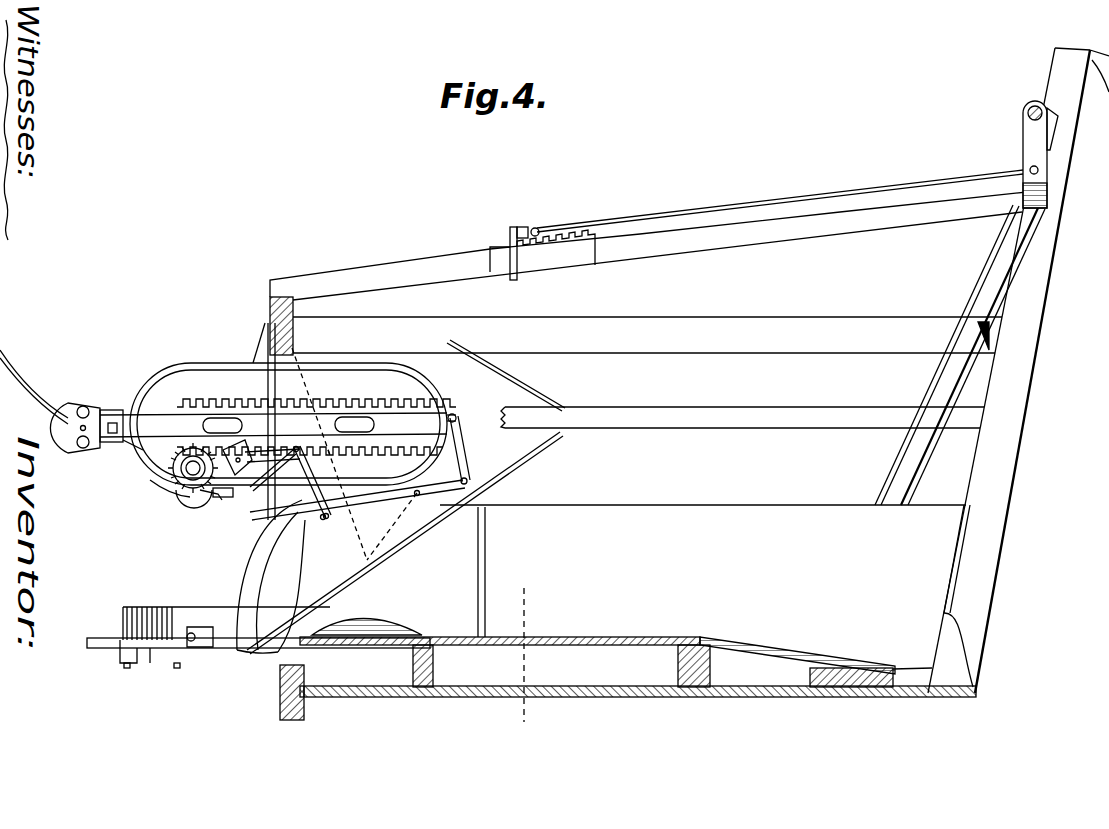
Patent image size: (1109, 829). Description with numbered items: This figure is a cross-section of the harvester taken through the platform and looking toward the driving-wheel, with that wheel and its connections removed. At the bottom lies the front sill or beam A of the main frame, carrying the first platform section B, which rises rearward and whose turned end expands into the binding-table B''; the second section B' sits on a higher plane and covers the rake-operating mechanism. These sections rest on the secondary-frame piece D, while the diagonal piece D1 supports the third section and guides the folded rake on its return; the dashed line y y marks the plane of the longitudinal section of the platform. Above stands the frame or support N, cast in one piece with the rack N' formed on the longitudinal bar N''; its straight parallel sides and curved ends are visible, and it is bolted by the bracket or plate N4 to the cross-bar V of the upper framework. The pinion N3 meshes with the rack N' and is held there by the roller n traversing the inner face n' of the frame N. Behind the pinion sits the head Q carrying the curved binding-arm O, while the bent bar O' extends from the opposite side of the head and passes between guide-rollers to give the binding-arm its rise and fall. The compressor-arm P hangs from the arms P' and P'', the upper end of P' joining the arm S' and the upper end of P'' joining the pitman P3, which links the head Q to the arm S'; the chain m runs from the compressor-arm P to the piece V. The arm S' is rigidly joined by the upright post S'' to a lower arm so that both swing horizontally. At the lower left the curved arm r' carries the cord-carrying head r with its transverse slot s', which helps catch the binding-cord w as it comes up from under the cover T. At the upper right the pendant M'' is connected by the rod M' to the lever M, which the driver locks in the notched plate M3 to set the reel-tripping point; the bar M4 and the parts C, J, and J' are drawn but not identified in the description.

The front sill or beam A is at (845, 692).
The bottom rail C is at (638, 705).
The second platform section B' is at (500, 630).
The first platform section B is at (816, 653).
The diagonal secondary-frame piece D1 is at (440, 666).
The secondary-frame piece D is at (679, 666).
The section line y y is at (521, 650).
The board J is at (706, 596).
The stem J' is at (439, 572).
The cross-bar of upper framework V is at (648, 273).
The upper arm S' is at (715, 416).
The rod M' is at (960, 355).
The arm M4 is at (780, 201).
The lever M is at (524, 239).
The notched plate M3 is at (542, 251).
The pendant M'' is at (1040, 154).
The bracket or plate N4 is at (268, 345).
The frame or support N is at (288, 424).
The rack N' is at (316, 415).
The inner face of frame n' is at (257, 415).
The longitudinal bar N'' is at (273, 430).
The curved bar or rod O' is at (50, 401).
The roller n is at (283, 496).
The pinion N3 is at (172, 487).
The head Q is at (210, 500).
The link or pitman P3 is at (261, 465).
The suspension arm P'' is at (313, 482).
The chain m is at (375, 505).
The front suspension arm P' is at (465, 450).
The compressor-arm P is at (357, 508).
The binding-cord w is at (406, 497).
The binding-arm O is at (285, 576).
The cover T is at (226, 623).
The upright post S'' is at (367, 616).
The cord-carrying head r is at (163, 623).
The transverse slot s' is at (204, 636).
The binding-table B'' is at (258, 666).
The curved arm r' is at (156, 668).